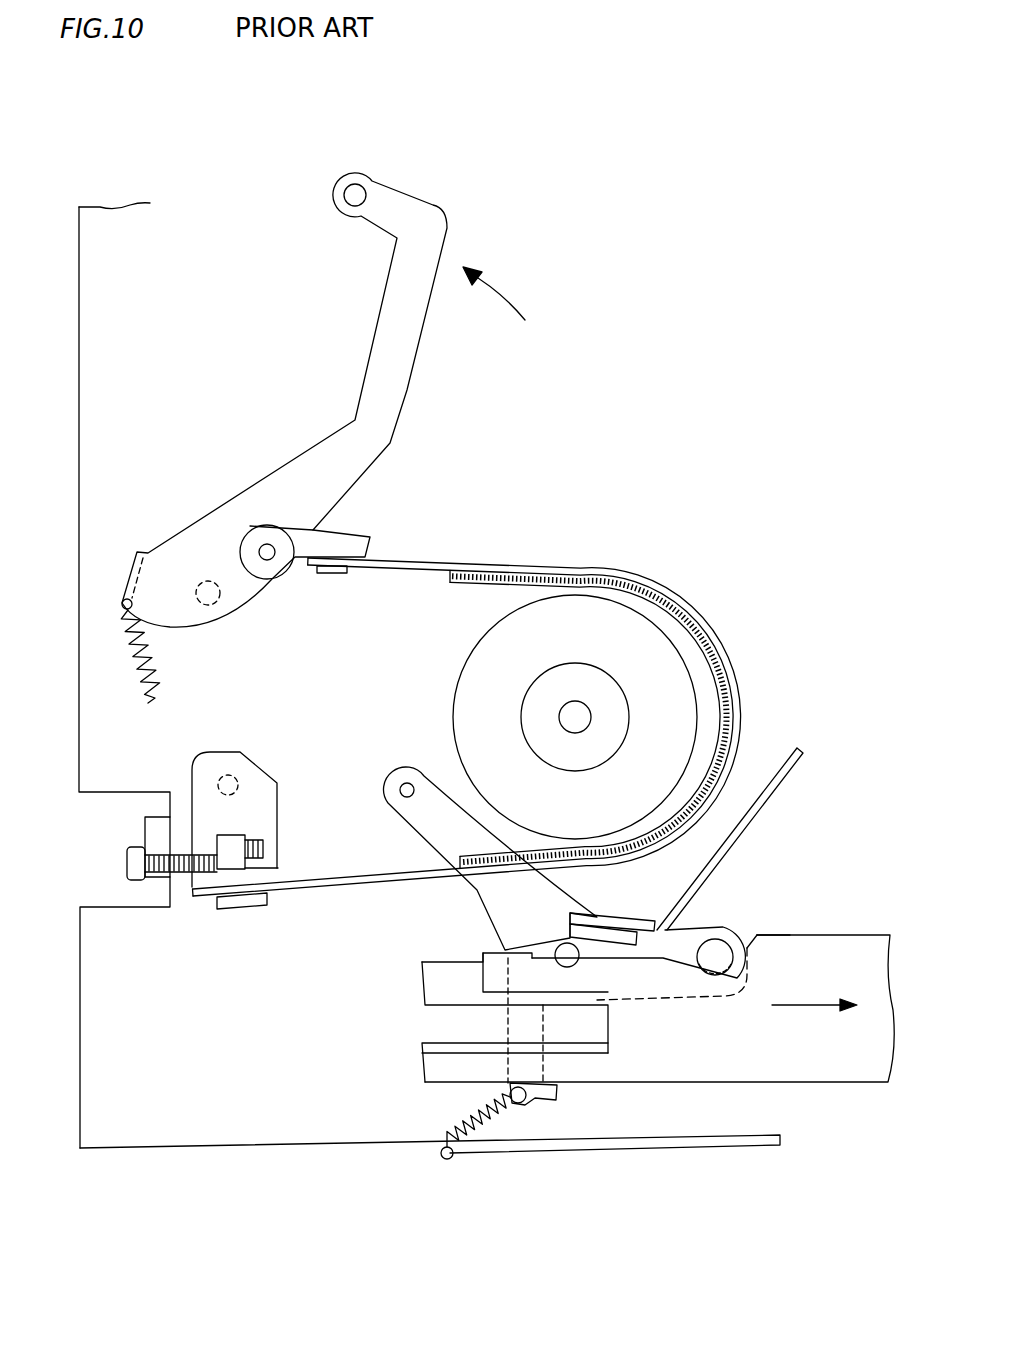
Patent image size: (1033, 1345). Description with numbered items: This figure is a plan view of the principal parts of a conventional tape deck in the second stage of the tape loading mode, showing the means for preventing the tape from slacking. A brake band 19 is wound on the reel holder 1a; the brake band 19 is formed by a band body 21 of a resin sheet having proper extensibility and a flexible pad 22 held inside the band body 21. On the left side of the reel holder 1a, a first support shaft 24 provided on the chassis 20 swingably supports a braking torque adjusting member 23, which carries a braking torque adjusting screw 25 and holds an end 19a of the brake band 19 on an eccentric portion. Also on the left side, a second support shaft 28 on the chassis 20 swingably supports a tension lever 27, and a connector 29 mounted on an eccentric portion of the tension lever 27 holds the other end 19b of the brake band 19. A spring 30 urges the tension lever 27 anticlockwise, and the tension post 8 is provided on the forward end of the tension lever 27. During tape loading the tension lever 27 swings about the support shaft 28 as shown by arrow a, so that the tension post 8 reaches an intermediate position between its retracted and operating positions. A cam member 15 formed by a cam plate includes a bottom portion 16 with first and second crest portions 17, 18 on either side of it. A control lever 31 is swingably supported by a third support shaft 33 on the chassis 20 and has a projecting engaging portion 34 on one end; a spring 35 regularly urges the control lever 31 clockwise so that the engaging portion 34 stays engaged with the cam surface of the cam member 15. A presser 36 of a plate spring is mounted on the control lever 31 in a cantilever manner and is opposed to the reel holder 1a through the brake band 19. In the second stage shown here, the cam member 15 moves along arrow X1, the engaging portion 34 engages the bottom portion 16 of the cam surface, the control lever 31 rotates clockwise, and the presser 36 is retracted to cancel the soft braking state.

The reel holder 1a is at (453, 718).
The tension post 8 is at (355, 184).
The cam member 15 is at (845, 935).
The bottom portion 16 is at (702, 975).
The first crest portion 17 is at (790, 935).
The second crest portion 18 is at (543, 957).
The brake band 19 is at (650, 582).
The end of the brake band 19a is at (203, 900).
The another end of the brake band 19b is at (333, 573).
The chassis 20 is at (185, 1153).
The band body 21 is at (697, 625).
The flexible pad 22 is at (708, 658).
The braking torque adjusting member 23 is at (263, 767).
The first support shaft 24 is at (228, 775).
The braking torque adjusting screw 25 is at (123, 862).
The tension lever 27 is at (407, 390).
The second support shaft 28 is at (208, 605).
The connector 29 is at (347, 530).
The spring 30 is at (137, 680).
The control lever 31 is at (577, 893).
The third support shaft 33 is at (569, 967).
The engaging portion 34 is at (716, 940).
The spring 35 is at (597, 1000).
The presser 36 is at (770, 787).
The arrow a is at (495, 293).
The arrow X1 is at (814, 991).